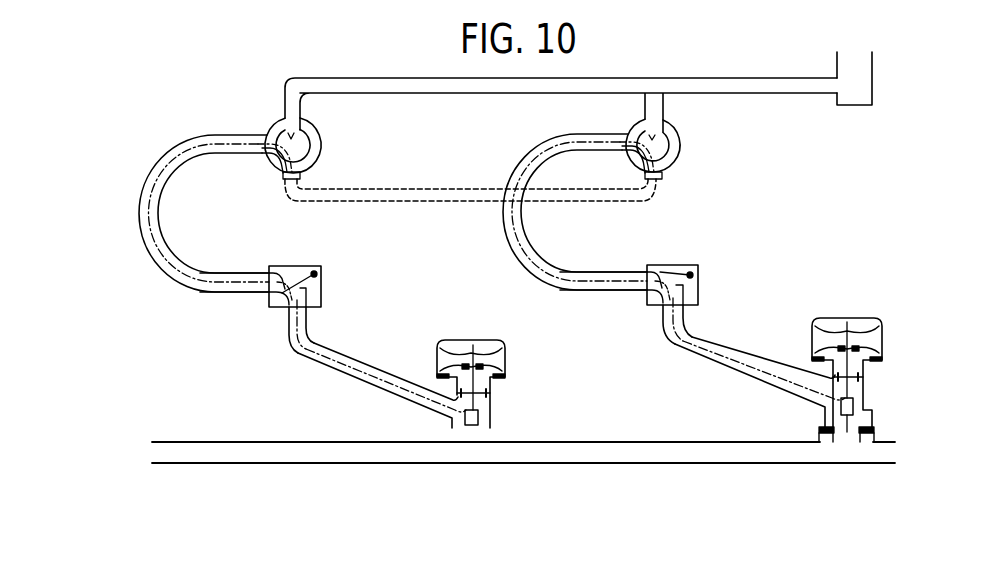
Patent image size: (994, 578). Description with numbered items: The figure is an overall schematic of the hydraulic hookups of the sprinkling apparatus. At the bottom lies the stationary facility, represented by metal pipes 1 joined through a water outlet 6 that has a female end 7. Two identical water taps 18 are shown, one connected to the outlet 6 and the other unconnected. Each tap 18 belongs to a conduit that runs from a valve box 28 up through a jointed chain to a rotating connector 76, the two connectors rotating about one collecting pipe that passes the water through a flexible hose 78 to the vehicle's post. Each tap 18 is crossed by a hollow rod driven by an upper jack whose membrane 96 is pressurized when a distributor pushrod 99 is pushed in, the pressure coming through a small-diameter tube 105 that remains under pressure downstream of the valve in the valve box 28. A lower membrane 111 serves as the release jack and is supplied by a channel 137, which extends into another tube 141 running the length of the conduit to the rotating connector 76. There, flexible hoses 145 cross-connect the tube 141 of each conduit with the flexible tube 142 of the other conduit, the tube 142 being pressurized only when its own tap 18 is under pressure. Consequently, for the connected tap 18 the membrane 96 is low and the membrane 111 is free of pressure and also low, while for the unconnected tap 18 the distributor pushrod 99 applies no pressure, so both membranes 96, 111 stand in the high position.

The metal pipe 1 is at (578, 442).
The water outlet 6 is at (822, 418).
The female end 7 is at (848, 62).
The water tap 18 is at (487, 340).
The valve box 28 is at (303, 265).
The rotating connector 76 is at (323, 150).
The flexible hose 78 is at (375, 78).
The membrane 96 is at (503, 354).
The distributor pushrod 99 is at (480, 413).
The tube 105 is at (333, 366).
The membrane 111 is at (505, 370).
The channel 137 is at (365, 362).
The tube 141 is at (166, 251).
The flexible tube 142 is at (192, 286).
The flexible hose 145 is at (410, 187).